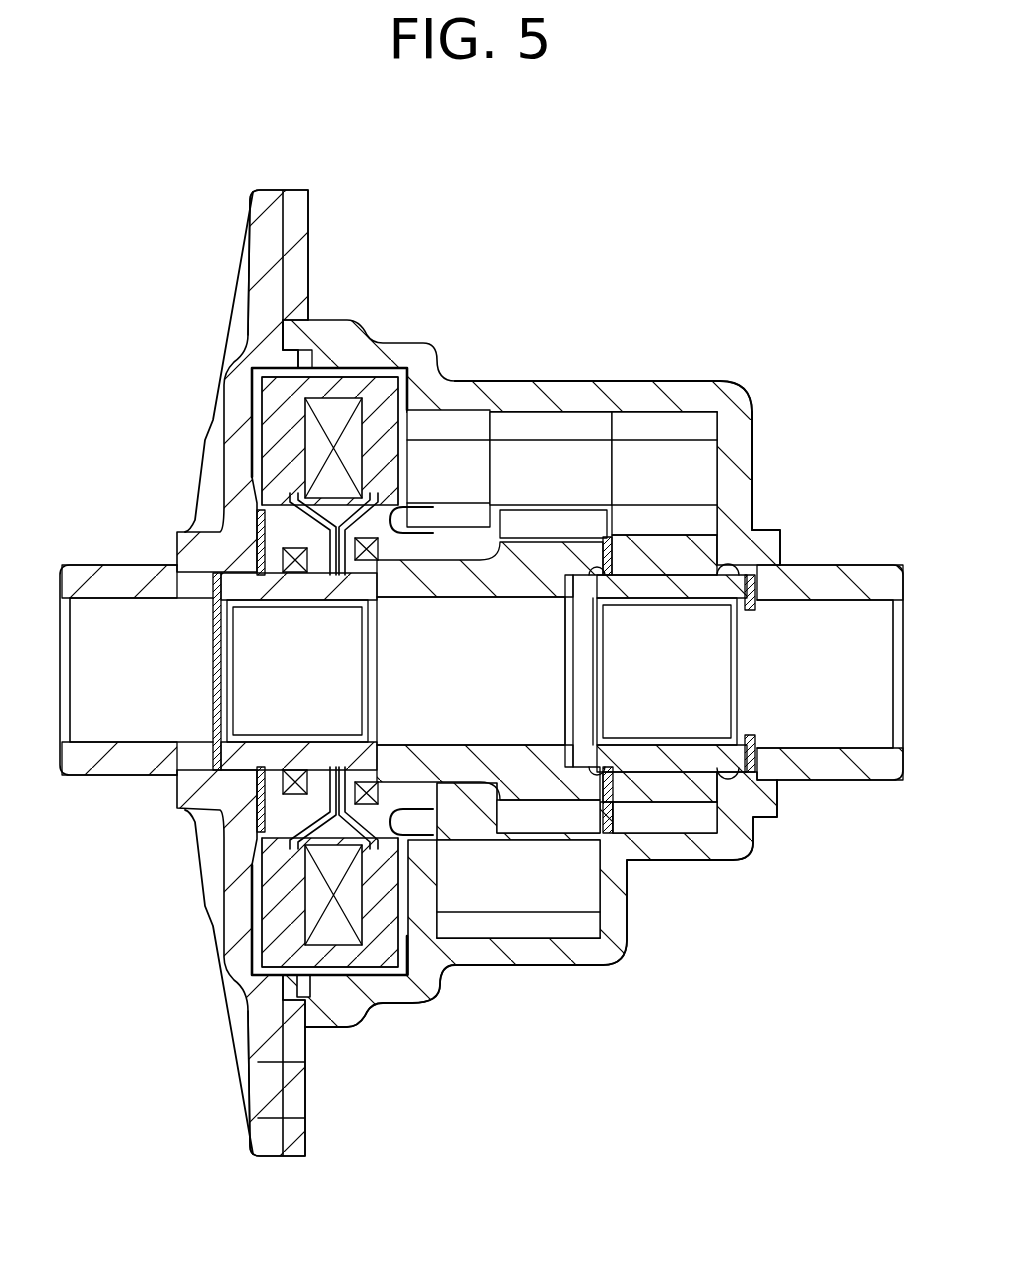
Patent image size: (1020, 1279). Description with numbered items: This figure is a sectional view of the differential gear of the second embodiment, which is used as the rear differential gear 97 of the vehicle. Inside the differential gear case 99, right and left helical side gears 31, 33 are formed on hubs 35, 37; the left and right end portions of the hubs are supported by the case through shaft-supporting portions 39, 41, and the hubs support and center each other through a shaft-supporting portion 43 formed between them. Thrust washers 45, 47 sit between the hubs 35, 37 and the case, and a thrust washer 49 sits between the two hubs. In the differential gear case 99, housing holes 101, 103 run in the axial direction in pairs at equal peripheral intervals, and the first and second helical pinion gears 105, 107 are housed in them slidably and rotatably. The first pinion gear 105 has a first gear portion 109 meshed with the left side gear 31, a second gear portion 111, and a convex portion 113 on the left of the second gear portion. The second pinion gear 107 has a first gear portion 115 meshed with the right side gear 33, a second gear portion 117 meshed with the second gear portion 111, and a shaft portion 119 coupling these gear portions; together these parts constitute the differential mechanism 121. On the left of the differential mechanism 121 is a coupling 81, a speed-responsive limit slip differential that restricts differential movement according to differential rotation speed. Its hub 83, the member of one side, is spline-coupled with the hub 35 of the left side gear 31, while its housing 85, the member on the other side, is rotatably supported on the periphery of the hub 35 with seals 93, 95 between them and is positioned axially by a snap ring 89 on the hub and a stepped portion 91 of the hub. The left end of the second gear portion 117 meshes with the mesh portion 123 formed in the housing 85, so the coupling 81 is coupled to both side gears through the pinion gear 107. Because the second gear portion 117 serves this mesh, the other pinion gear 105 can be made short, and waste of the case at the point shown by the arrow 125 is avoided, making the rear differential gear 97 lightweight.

The left helical side gear 31 is at (530, 545).
The right helical side gear 33 is at (668, 800).
The hub 35 is at (405, 597).
The hub 37 is at (665, 578).
The shaft-supporting portion 39 is at (240, 590).
The shaft-supporting portion 41 is at (732, 600).
The shaft-supporting portion 43 is at (610, 565).
The thrust washer 45 is at (215, 607).
The thrust washer 47 is at (752, 750).
The thrust washer 49 is at (610, 785).
The coupling 81 is at (203, 388).
The hub 83 is at (330, 570).
The housing 85 is at (365, 377).
The snap ring 89 is at (275, 775).
The stepped portion 91 is at (345, 758).
The seal 93 is at (305, 573).
The seal 95 is at (350, 560).
The rear differential gear 97 is at (510, 642).
The differential gear case 99 is at (290, 190).
The housing hole 101 is at (525, 942).
The housing hole 103 is at (565, 410).
The first helical pinion gear 105 is at (628, 952).
The second helical pinion gear 107 is at (752, 385).
The first gear portion 109 is at (560, 928).
The second gear portion 111 is at (485, 928).
The convex portion 113 is at (410, 830).
The first gear portion 115 is at (663, 428).
The second gear portion 117 is at (440, 428).
The shaft portion 119 is at (578, 487).
The differential mechanism 121 is at (677, 335).
The mesh portion 123 is at (412, 812).
The arrow 125 is at (758, 990).